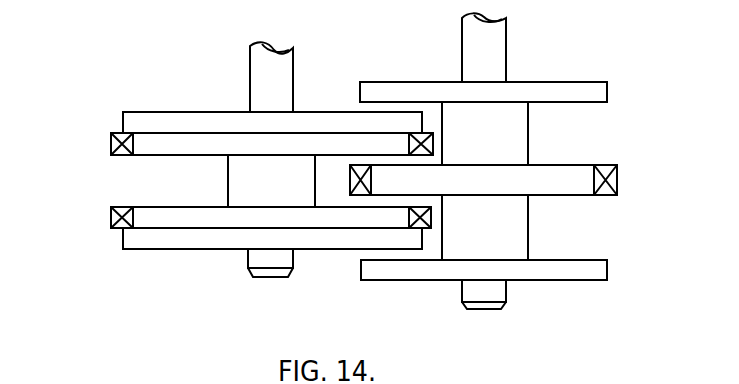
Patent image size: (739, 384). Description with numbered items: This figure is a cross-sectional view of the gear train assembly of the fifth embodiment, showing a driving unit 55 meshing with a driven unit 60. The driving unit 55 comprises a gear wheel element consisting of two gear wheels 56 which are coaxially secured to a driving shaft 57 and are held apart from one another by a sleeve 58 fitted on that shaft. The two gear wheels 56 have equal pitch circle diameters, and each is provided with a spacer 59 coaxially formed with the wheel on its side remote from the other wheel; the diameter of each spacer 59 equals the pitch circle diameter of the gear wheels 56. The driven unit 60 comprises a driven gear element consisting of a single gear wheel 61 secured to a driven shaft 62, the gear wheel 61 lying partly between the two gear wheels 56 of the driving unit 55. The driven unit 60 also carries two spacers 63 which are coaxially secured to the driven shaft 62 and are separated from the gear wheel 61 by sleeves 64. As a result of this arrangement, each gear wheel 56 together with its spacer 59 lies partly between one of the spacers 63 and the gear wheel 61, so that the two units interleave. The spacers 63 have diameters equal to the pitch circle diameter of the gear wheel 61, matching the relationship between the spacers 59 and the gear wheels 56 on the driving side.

The driving unit 55 is at (183, 112).
The gear wheels 56 is at (111, 213).
The driving shaft 57 is at (280, 73).
The sleeve 58 is at (270, 193).
The spacer 59 is at (137, 120).
The driven unit 60 is at (569, 163).
The gear wheel 61 is at (586, 191).
The driven shaft 62 is at (492, 309).
The spacers 63 is at (564, 85).
The sleeves 64 is at (490, 145).